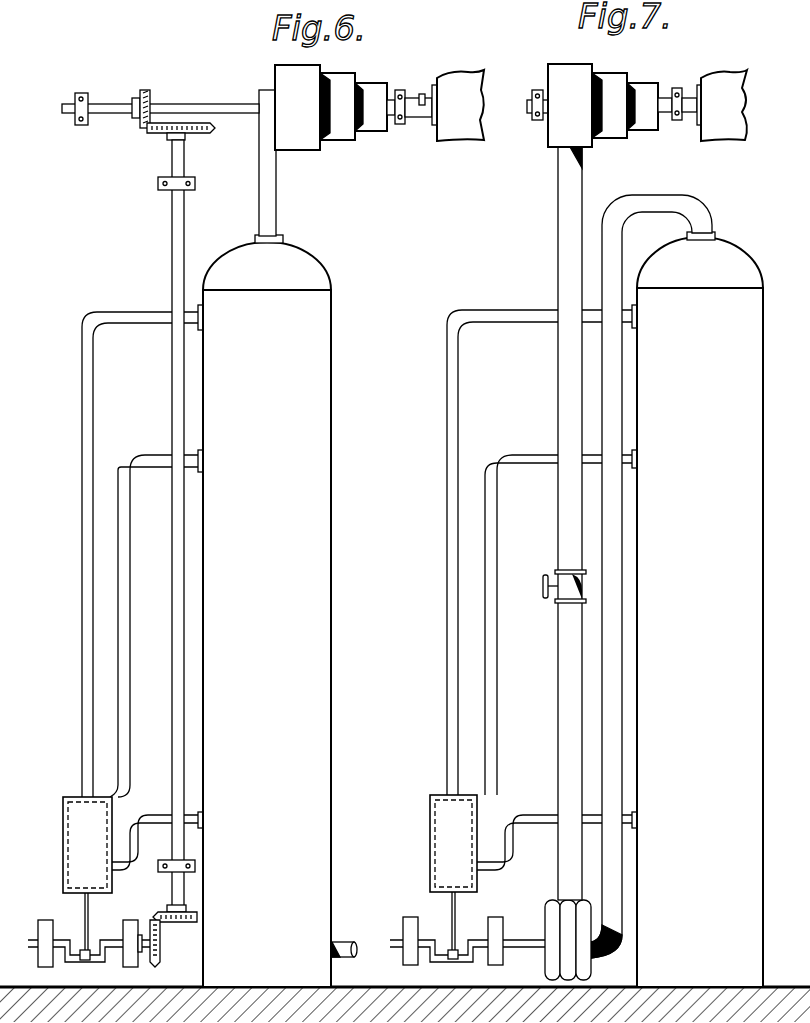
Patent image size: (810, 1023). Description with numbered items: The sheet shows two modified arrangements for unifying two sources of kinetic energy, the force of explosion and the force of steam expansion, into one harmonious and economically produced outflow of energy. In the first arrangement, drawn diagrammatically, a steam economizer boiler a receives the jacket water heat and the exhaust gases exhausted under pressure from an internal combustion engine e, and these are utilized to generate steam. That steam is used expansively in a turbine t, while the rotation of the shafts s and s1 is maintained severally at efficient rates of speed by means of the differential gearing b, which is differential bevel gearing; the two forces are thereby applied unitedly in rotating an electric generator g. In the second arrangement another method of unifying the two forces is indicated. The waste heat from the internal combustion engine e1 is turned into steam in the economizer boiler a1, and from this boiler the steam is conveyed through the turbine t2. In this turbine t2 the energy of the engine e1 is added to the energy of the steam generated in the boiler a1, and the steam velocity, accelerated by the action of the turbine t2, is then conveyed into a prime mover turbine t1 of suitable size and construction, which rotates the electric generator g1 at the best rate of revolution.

In FIG. 6, the steam economizer boiler a is at (280, 611).
In FIG. 6, the differential gearing b is at (147, 131).
In FIG. 6, the internal combustion engine e is at (77, 830).
In FIG. 6, the electric generator g is at (460, 115).
In FIG. 6, the shaft s is at (58, 940).
In FIG. 6, the shaft s1 is at (186, 104).
In FIG. 6, the turbine t is at (348, 150).
In FIG. 7, the economizer boiler a1 is at (700, 609).
In FIG. 7, the internal combustion engine e1 is at (450, 830).
In FIG. 7, the electric generator g1 is at (727, 120).
In FIG. 7, the prime mover turbine t1 is at (614, 482).
In FIG. 7, the turbine t2 is at (568, 932).